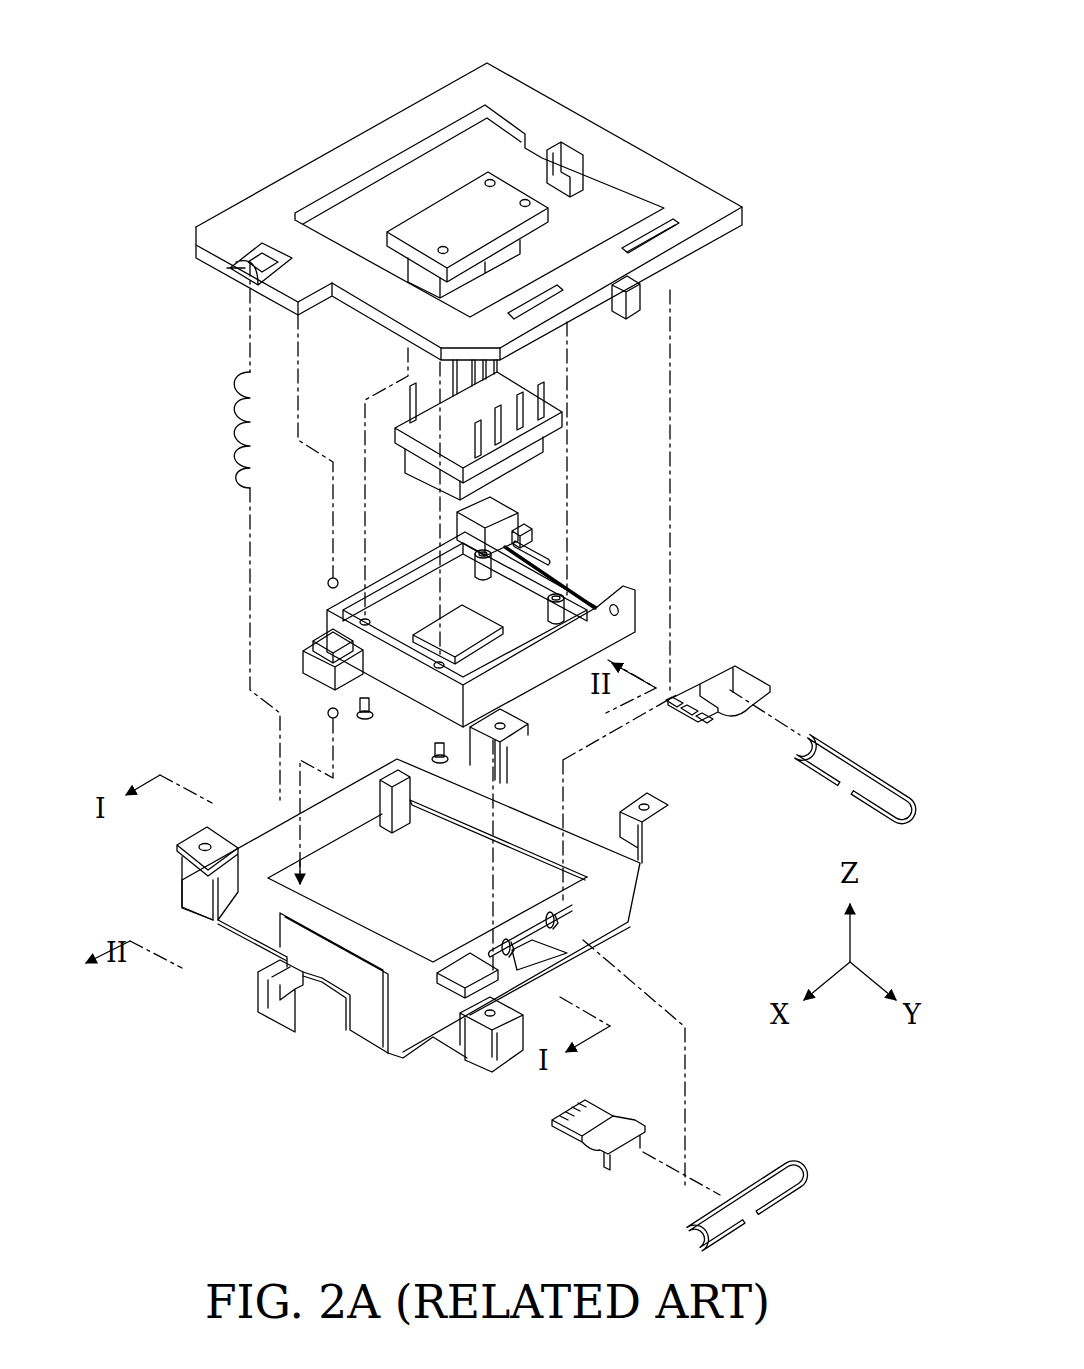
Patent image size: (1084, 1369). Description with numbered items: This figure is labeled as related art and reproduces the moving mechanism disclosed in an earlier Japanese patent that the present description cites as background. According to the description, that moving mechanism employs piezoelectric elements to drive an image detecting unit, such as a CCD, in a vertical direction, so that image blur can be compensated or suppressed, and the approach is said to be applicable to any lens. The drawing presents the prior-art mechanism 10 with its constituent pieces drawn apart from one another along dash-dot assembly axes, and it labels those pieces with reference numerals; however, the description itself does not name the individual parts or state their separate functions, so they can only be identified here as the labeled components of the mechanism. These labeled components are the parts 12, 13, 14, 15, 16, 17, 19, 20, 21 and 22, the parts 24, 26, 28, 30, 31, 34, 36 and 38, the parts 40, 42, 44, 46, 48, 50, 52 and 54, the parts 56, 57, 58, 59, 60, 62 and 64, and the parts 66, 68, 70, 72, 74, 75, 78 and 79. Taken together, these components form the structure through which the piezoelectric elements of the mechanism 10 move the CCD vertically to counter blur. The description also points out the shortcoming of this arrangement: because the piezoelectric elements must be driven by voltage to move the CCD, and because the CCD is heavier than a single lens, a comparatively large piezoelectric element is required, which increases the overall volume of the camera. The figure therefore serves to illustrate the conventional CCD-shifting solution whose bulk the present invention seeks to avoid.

The test socket assembly 10 is at (748, 462).
The base 12 is at (648, 898).
The frame 13 is at (324, 610).
The cover plate 14 is at (655, 140).
The positioning pin 15 is at (329, 580).
The connector 16 is at (520, 388).
The connector body 17 is at (545, 440).
The opening 19 is at (432, 1026).
The recess 20 is at (380, 902).
The clip 21 is at (285, 1008).
The mounting bracket 22 is at (505, 715).
The wall 24 is at (453, 808).
The wall 26 is at (405, 780).
The shaft 28 is at (585, 940).
The block 30 is at (462, 968).
The hole 31 is at (500, 973).
The lever 34 is at (528, 927).
The washer 36 is at (548, 915).
The retaining ring 38 is at (505, 938).
The clip 40 is at (556, 1135).
The spring 42 is at (783, 1166).
The cavity 44 is at (438, 655).
The frame body 46 is at (424, 692).
The opening 48 is at (485, 639).
The side plate 50 is at (580, 566).
The block 52 is at (298, 660).
The notch 54 is at (322, 638).
The rod 56 is at (582, 567).
The pin 57 is at (553, 550).
The block 58 is at (496, 515).
The pin 59 is at (524, 523).
The latch assembly 60 is at (650, 588).
The screw 62 is at (436, 754).
The standoff 64 is at (366, 616).
The top plate 66 is at (285, 200).
The mounting pad 68 is at (430, 160).
The spring 70 is at (242, 436).
The notch 72 is at (232, 268).
The latch 74 is at (547, 173).
The clip 75 is at (742, 690).
The spring 78 is at (843, 752).
The slot 79 is at (672, 230).